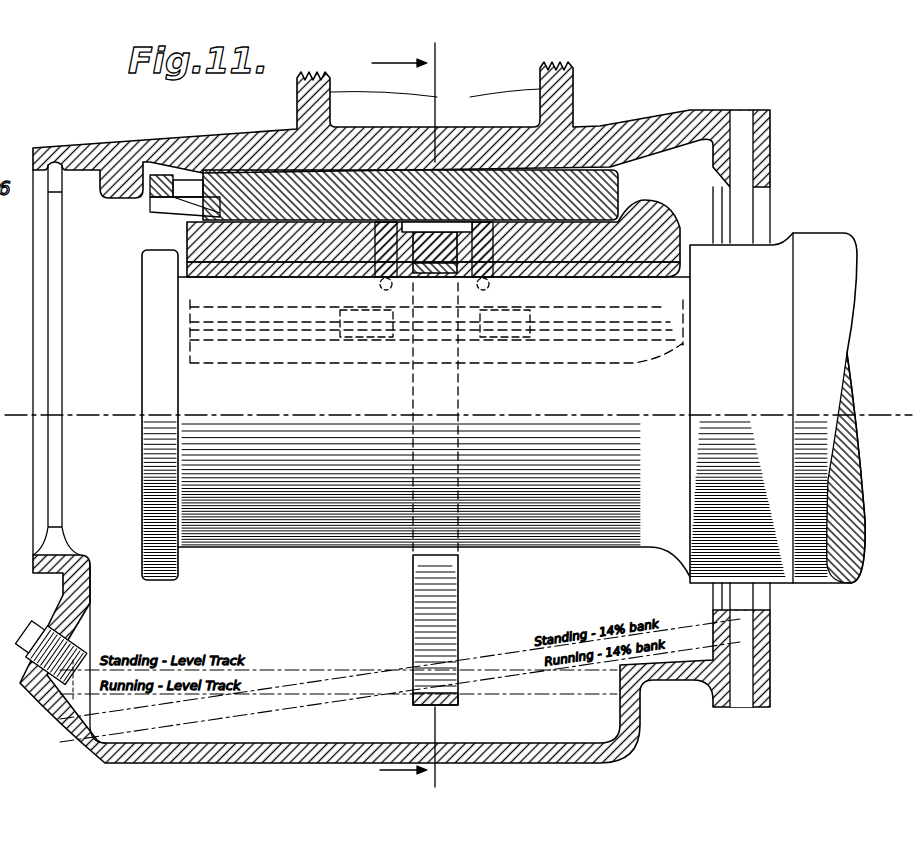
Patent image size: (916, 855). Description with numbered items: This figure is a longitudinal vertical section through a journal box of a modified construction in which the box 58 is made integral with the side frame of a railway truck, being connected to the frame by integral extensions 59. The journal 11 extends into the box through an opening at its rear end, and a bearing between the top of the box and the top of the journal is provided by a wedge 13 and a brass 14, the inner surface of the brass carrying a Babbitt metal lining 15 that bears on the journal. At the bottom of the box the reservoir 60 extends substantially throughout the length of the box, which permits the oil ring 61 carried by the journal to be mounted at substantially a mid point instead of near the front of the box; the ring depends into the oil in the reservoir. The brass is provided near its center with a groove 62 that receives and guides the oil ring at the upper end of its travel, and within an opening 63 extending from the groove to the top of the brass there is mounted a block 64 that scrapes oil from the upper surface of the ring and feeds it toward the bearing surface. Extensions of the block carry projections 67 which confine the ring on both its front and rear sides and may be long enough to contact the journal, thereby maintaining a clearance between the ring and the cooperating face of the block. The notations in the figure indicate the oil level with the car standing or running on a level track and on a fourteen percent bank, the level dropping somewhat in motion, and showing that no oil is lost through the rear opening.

The journal 11 is at (313, 549).
The wedge 13 is at (618, 185).
The brass 14 is at (646, 214).
The Babbitt metal lining 15 is at (268, 272).
The box 58 is at (242, 131).
The integral extensions 59 is at (435, 99).
The reservoir 60 is at (603, 721).
The oil ring 61 is at (446, 278).
The groove 62 is at (457, 349).
The opening 63 is at (438, 229).
The block 64 is at (424, 232).
The projections 67 is at (464, 282).